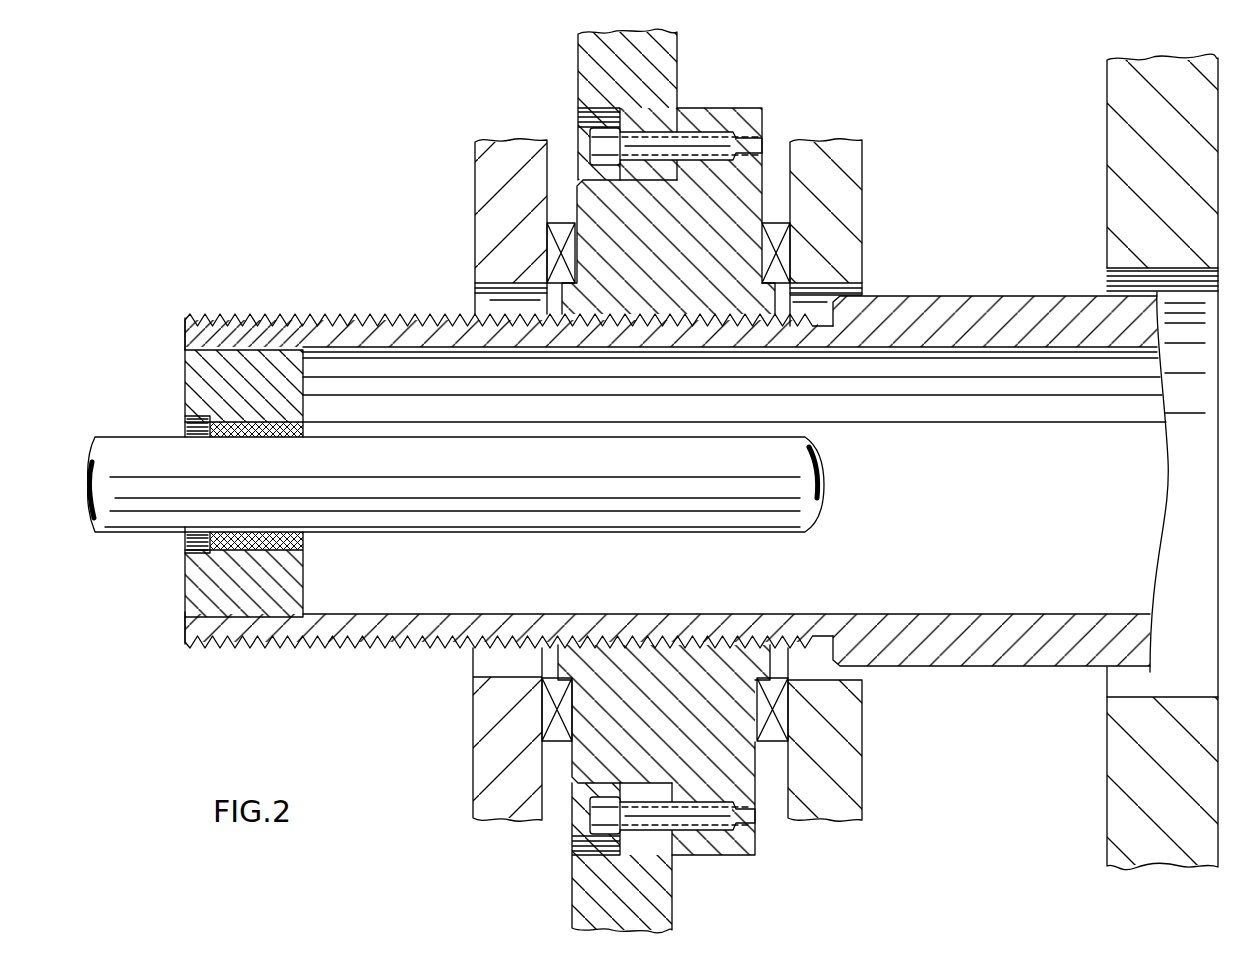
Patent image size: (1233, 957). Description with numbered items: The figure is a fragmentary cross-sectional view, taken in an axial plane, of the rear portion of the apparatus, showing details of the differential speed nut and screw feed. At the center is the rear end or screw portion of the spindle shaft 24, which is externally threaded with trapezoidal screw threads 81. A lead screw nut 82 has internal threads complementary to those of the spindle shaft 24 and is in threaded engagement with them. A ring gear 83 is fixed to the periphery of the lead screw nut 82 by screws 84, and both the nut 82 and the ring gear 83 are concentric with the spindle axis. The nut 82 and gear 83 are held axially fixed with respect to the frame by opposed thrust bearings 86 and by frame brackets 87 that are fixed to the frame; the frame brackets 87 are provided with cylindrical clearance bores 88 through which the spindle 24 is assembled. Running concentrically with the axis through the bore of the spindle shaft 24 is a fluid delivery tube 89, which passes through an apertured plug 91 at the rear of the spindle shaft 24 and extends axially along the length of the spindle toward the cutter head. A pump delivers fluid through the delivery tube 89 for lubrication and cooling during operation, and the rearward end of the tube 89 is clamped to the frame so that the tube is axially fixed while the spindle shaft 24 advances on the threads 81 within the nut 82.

The spindle shaft 24 is at (968, 313).
The trapezoidal screw threads 81 is at (350, 313).
The lead screw nut 82 is at (742, 180).
The ring gear 83 is at (652, 63).
The screws 84 is at (605, 143).
The thrust bearings 86 is at (562, 240).
The frame brackets 87 is at (493, 178).
The cylindrical clearance bores 88 is at (490, 298).
The fluid delivery tube 89 is at (635, 500).
The apertured plug 91 is at (295, 583).